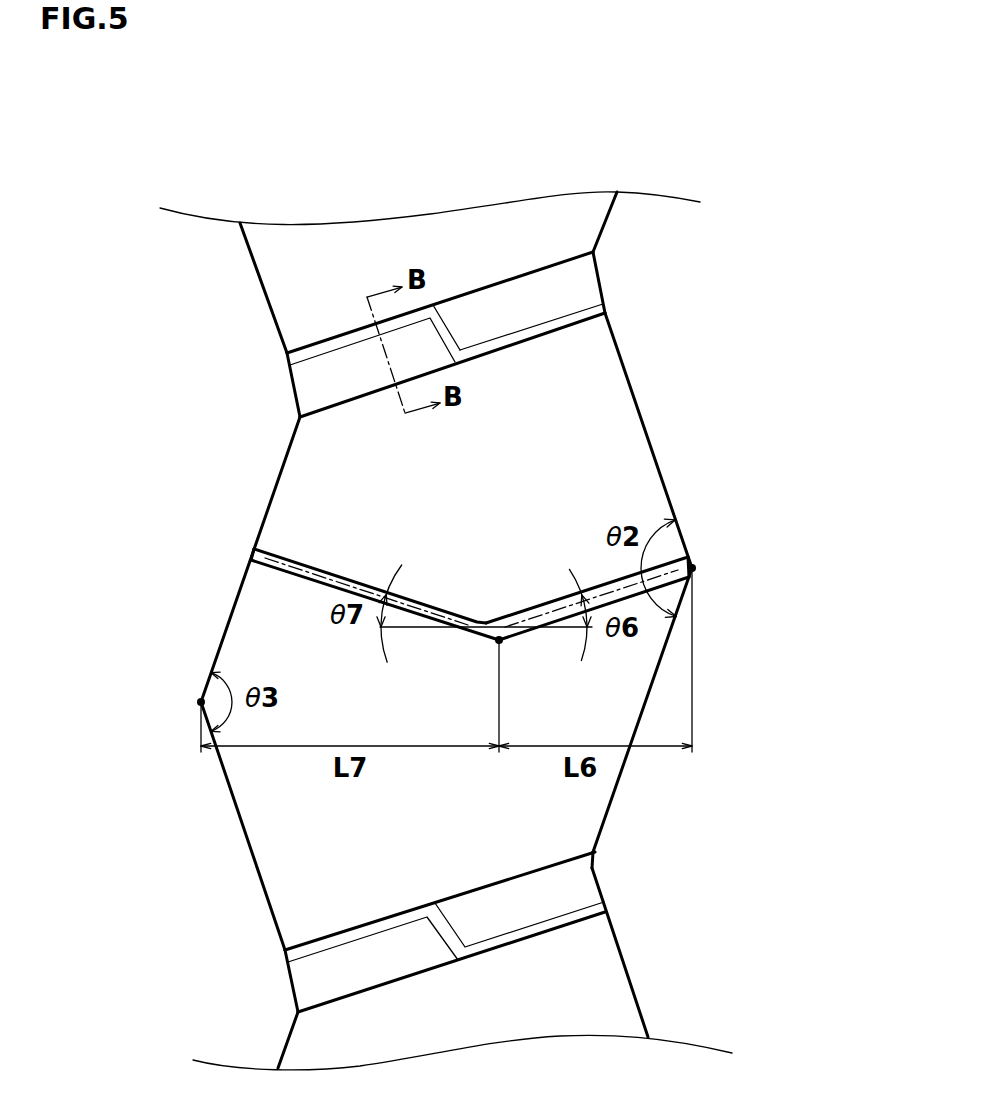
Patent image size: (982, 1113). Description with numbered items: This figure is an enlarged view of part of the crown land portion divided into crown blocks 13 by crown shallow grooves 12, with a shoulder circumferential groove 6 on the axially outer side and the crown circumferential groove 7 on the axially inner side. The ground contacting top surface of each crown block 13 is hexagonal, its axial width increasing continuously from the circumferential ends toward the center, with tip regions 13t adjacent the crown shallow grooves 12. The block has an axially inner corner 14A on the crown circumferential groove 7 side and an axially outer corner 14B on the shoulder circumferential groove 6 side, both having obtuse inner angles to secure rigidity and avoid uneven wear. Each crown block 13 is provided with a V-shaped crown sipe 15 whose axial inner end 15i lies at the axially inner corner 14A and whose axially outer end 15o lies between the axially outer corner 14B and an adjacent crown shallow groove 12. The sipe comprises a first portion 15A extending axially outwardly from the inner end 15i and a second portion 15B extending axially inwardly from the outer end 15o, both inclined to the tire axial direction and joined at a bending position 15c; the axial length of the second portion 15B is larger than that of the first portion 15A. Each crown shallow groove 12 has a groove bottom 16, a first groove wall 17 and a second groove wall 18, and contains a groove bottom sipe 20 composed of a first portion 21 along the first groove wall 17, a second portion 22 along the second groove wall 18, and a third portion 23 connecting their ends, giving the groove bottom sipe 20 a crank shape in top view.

The shoulder circumferential groove 6 is at (232, 265).
The crown circumferential groove 7 is at (630, 225).
The crown shallow groove 12 is at (472, 614).
The crown block 13 is at (337, 832).
The block tip corner 13t is at (337, 400).
The axially inner corner 14A is at (695, 569).
The axially outer corner 14B is at (200, 702).
The crown sipe 15 is at (439, 575).
The first portion 15A is at (545, 602).
The second portion 15B is at (340, 577).
The bending position 15c is at (497, 643).
The axial inner end 15i is at (695, 566).
The axially outer end 15o is at (250, 550).
The groove bottom 16 is at (567, 293).
The first groove wall 17 is at (567, 265).
The second groove wall 18 is at (578, 316).
The groove bottom sipe 20 is at (446, 222).
The first portion 21 is at (334, 347).
The second portion 22 is at (531, 240).
The third portion 23 is at (448, 343).